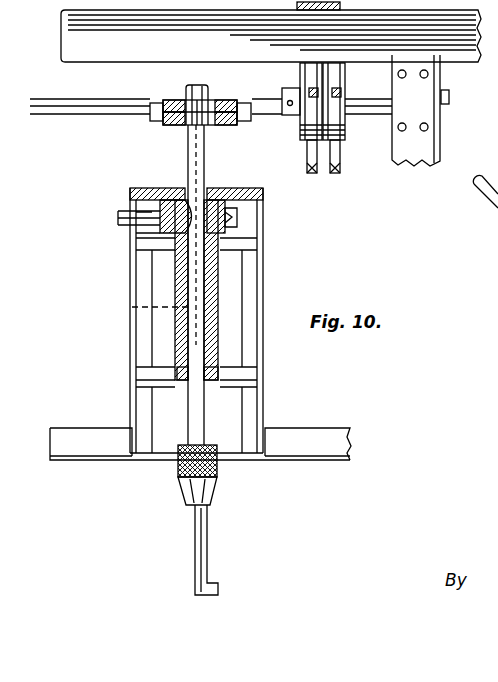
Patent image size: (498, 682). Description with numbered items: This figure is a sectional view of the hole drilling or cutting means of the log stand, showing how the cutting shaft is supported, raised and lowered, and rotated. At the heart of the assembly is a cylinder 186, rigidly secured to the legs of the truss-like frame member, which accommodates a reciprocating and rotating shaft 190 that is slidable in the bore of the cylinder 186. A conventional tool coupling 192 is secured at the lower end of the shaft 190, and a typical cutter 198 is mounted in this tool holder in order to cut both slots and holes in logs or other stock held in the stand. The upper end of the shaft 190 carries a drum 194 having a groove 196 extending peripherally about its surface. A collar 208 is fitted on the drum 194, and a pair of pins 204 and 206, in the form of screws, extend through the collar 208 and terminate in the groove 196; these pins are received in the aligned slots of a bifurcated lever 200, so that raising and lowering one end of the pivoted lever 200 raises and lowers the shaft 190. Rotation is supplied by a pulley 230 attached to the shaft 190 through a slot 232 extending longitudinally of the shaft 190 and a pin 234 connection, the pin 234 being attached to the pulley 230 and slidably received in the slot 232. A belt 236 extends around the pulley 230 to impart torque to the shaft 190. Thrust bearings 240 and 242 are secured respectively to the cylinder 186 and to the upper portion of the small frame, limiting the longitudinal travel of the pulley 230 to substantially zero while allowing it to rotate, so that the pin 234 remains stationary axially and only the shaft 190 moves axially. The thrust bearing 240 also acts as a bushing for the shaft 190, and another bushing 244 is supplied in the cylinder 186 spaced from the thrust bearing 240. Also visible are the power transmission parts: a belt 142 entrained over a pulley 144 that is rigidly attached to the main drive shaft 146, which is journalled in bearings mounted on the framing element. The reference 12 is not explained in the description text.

The frame beam 12 is at (471, 32).
The belt 142 is at (332, 172).
The pulley 144 is at (340, 132).
The main drive shaft 146 is at (450, 97).
The cylinder 186 is at (220, 303).
The shaft 190 is at (203, 162).
The tool coupling 192 is at (180, 482).
The drum 194 is at (185, 98).
The groove 196 is at (210, 101).
The cutter 198 is at (208, 584).
The bifurcated lever 200 is at (167, 127).
The pin 204 is at (250, 120).
The pin 206 is at (151, 118).
The collar 208 is at (170, 128).
The pulley 230 is at (223, 198).
The slot 232 is at (128, 306).
The pin 234 is at (160, 212).
The belt 236 is at (118, 224).
The thrust bearing 240 is at (218, 254).
The thrust bearing 242 is at (133, 188).
The bushing 244 is at (212, 380).